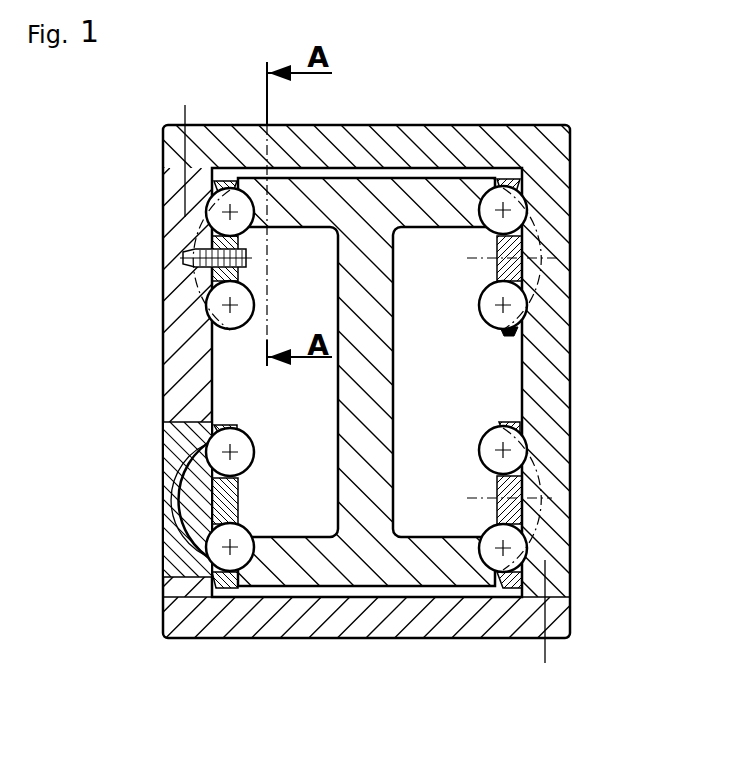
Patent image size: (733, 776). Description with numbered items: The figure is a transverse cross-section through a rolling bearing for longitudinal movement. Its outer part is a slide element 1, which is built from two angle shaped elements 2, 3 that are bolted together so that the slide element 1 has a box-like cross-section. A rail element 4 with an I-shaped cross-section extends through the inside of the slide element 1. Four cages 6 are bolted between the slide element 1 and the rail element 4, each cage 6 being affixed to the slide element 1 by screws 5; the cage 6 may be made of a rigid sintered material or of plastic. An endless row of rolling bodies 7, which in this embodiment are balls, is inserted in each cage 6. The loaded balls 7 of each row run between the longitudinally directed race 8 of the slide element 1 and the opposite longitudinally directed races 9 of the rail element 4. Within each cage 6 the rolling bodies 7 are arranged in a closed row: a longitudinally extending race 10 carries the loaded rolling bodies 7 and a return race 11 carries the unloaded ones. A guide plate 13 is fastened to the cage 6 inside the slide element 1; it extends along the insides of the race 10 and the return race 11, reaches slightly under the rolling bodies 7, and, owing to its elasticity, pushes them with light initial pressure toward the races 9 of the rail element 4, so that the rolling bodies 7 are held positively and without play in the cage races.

The slide element 1 is at (453, 121).
The angle shaped element 2 is at (558, 148).
The angle shaped element 3 is at (268, 625).
The rail element 4 is at (388, 567).
The screws 5 is at (180, 267).
The cage 6 is at (508, 258).
The rolling bodies 7 is at (520, 207).
The race 8 is at (503, 585).
The races 9 is at (482, 550).
The race 10 is at (220, 187).
The return race 11 is at (523, 330).
The guide plate 13 is at (210, 507).